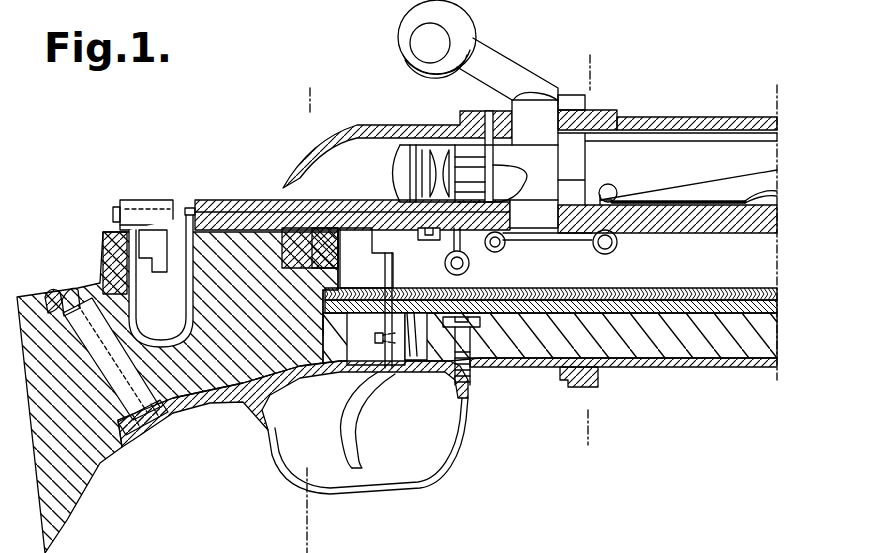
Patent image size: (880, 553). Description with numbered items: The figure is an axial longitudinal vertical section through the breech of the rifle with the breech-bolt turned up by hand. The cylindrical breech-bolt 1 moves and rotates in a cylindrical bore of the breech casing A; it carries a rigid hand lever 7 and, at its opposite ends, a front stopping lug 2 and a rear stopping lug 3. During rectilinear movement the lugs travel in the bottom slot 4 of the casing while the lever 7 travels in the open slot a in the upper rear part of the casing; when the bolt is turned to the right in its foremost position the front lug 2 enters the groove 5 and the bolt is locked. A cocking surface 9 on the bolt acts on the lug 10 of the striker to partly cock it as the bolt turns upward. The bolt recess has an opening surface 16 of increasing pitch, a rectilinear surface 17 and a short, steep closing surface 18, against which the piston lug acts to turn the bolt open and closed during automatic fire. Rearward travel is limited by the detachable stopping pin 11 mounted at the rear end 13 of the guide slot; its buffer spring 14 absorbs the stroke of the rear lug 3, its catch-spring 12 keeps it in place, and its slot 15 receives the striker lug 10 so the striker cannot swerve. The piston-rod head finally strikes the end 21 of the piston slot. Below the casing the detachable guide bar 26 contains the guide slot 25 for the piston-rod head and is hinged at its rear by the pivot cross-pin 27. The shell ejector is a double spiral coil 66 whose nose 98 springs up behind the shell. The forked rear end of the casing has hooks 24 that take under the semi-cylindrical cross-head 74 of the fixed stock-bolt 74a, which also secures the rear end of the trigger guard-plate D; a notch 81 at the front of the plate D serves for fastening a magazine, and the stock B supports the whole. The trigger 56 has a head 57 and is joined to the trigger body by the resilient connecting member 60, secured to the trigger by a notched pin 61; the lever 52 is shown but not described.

The breech-bolt 1 is at (621, 178).
The front stopping lug 2 is at (317, 320).
The rear stopping lug 3 is at (557, 241).
The bottom slot 4 is at (668, 234).
The groove 5 is at (734, 189).
The lever 7 is at (488, 66).
The cocking surface 9 is at (518, 176).
The lug of the striker 10 is at (468, 195).
The stopping pin 11 is at (146, 199).
The catch-spring 12 is at (115, 236).
The slot at rear end of breech casing 13 is at (162, 251).
The buffer spring 14 is at (192, 212).
The slot in stopping pin 15 is at (127, 199).
The opening surface 16 is at (727, 176).
The rectilinear surface 17 is at (667, 200).
The closing surface 18 is at (766, 190).
The end of piston slot 21 is at (366, 258).
The hooks 24 is at (50, 300).
The guide slot 25 is at (708, 288).
The guide bar 26 is at (679, 310).
The pivot cross-pin 27 is at (285, 200).
The link ring 52 is at (497, 253).
The trigger 56 is at (393, 330).
The head of the trigger 57 is at (392, 243).
The connecting member 60 is at (450, 270).
The notched pin 61 is at (377, 341).
The double spiral coil ejector 66 is at (598, 250).
The cross-head of stock-bolt 74 is at (62, 294).
The fixed stock-bolt 74a is at (152, 428).
The notch 81 is at (599, 380).
The nose of ejector 98 is at (608, 184).
The breech casing A is at (691, 117).
The stock B is at (96, 462).
The trigger guard-plate D is at (773, 366).
The open slot a is at (296, 270).